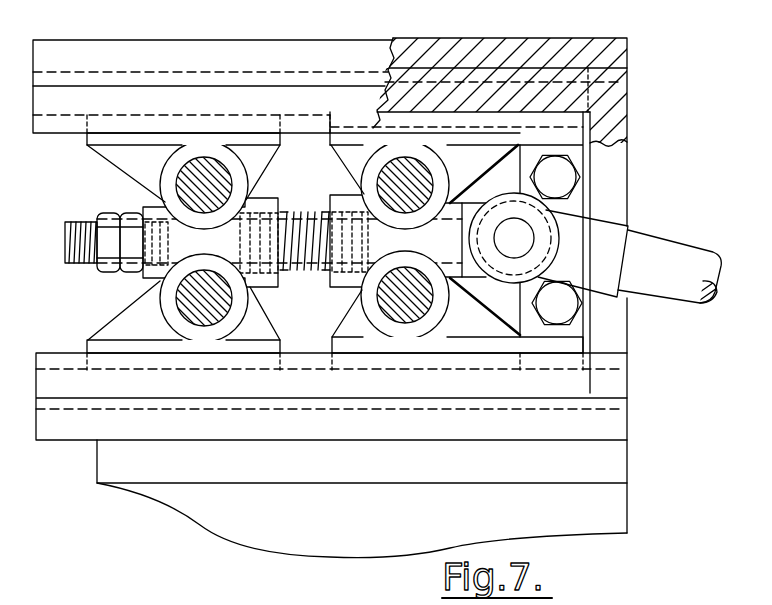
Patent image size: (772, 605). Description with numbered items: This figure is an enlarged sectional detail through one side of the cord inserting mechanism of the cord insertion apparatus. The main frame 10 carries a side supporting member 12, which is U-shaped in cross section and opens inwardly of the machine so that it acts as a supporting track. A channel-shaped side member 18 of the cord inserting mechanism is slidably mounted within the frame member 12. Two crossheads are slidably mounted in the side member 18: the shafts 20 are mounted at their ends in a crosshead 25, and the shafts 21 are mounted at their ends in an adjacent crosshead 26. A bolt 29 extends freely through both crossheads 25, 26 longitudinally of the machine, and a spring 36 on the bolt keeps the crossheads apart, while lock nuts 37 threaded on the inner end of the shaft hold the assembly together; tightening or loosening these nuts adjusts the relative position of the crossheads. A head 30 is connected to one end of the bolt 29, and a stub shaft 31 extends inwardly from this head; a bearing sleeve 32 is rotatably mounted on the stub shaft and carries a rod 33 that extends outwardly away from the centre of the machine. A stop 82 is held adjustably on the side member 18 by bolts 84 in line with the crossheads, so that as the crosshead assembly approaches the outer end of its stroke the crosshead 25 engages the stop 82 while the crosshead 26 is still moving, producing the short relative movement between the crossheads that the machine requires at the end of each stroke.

The main frame 10 is at (617, 421).
The side supporting member 12 is at (518, 42).
The channel-shaped side member 18 is at (415, 85).
The shaft 20 is at (382, 176).
The shaft 21 is at (203, 157).
The crosshead 25 is at (452, 118).
The crosshead 26 is at (208, 133).
The bolt 29 is at (305, 270).
The head 30 is at (475, 207).
The stub shaft 31 is at (520, 232).
The bearing sleeve 32 is at (547, 237).
The rod 33 is at (663, 292).
The spring 36 is at (290, 207).
The lock nut 37 is at (110, 212).
The stop 82 is at (530, 340).
The bolt 84 is at (563, 178).